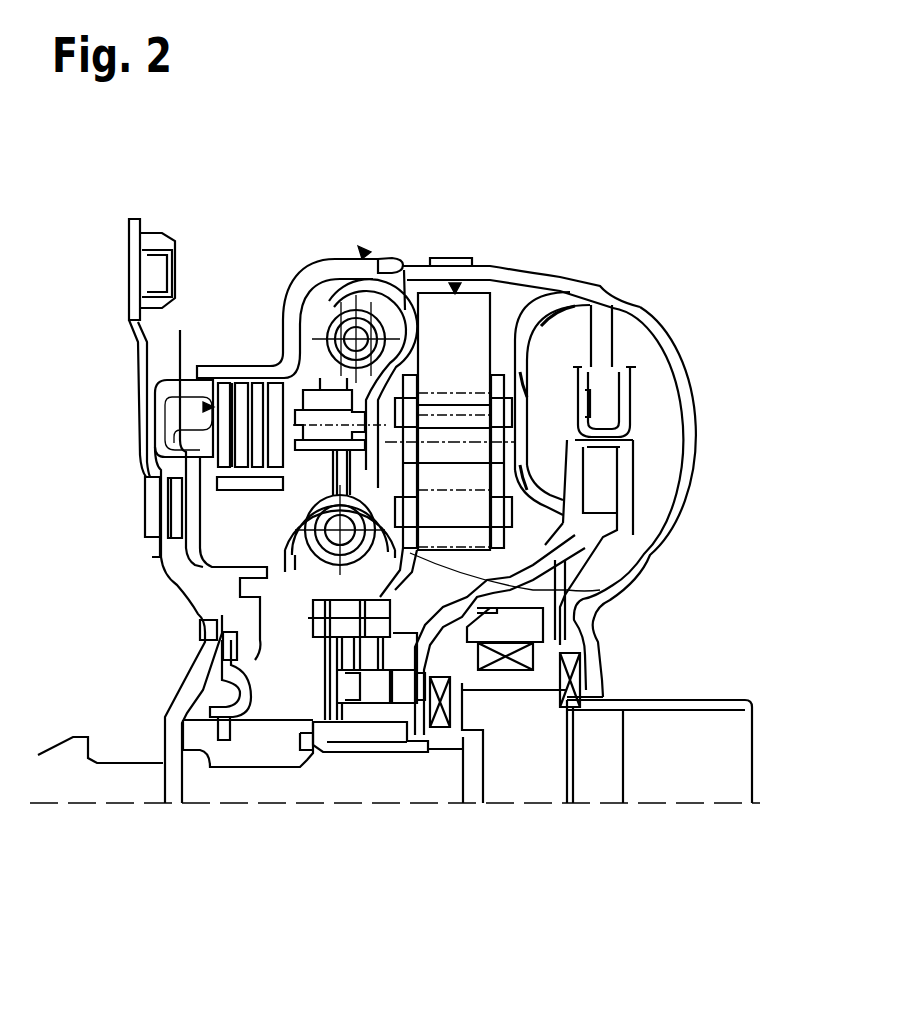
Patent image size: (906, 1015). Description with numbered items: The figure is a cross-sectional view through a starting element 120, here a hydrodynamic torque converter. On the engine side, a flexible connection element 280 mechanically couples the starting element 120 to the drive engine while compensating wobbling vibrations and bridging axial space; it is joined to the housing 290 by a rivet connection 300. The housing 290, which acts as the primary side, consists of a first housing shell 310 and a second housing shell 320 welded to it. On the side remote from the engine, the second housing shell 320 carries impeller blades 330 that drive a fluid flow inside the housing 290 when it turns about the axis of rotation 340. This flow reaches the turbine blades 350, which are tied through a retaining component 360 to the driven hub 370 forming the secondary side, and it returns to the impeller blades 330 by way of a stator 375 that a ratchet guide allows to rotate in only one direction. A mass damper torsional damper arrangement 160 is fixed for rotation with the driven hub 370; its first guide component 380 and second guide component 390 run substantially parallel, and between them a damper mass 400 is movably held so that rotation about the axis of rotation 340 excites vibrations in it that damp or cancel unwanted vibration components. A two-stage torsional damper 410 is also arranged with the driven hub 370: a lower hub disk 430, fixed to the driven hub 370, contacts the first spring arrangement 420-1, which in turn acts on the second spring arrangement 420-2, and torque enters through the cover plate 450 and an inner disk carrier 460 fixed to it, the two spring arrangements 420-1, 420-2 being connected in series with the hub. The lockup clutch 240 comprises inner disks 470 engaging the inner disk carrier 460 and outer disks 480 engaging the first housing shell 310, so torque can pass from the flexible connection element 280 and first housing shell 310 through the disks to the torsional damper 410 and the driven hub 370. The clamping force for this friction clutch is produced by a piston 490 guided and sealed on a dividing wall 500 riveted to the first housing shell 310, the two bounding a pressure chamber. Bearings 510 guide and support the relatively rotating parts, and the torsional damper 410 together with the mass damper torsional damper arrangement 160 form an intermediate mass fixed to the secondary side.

The starting element 120 is at (683, 95).
The mass damper torsional damper arrangement 160 is at (470, 337).
The lockup clutch 240 is at (203, 407).
The flexible connection element 280 is at (136, 220).
The housing 290 is at (366, 252).
The rivet connection 300 is at (145, 492).
The first housing shell 310 is at (322, 262).
The second housing shell 320 is at (665, 335).
The impeller blades 330 is at (643, 390).
The axis of rotation 340 is at (443, 805).
The turbine blades 350 is at (570, 340).
The retaining component 360 is at (600, 560).
The driven hub 370 is at (387, 735).
The stator 375 is at (600, 473).
The first guide component 380 is at (600, 590).
The second guide component 390 is at (598, 510).
The damper mass 400 is at (550, 290).
The two-stage torsional damper 410 is at (295, 535).
The first spring arrangement 420-1 is at (300, 575).
The second spring arrangement 420-2 is at (330, 307).
The lower hub disk 430 is at (335, 650).
The cover plate 450 is at (453, 287).
The inner disk carrier 460 is at (218, 497).
The inner disks 470 is at (256, 400).
The outer disks 480 is at (213, 392).
The piston 490 is at (170, 443).
The dividing wall 500 is at (193, 617).
The bearings 510 is at (445, 700).